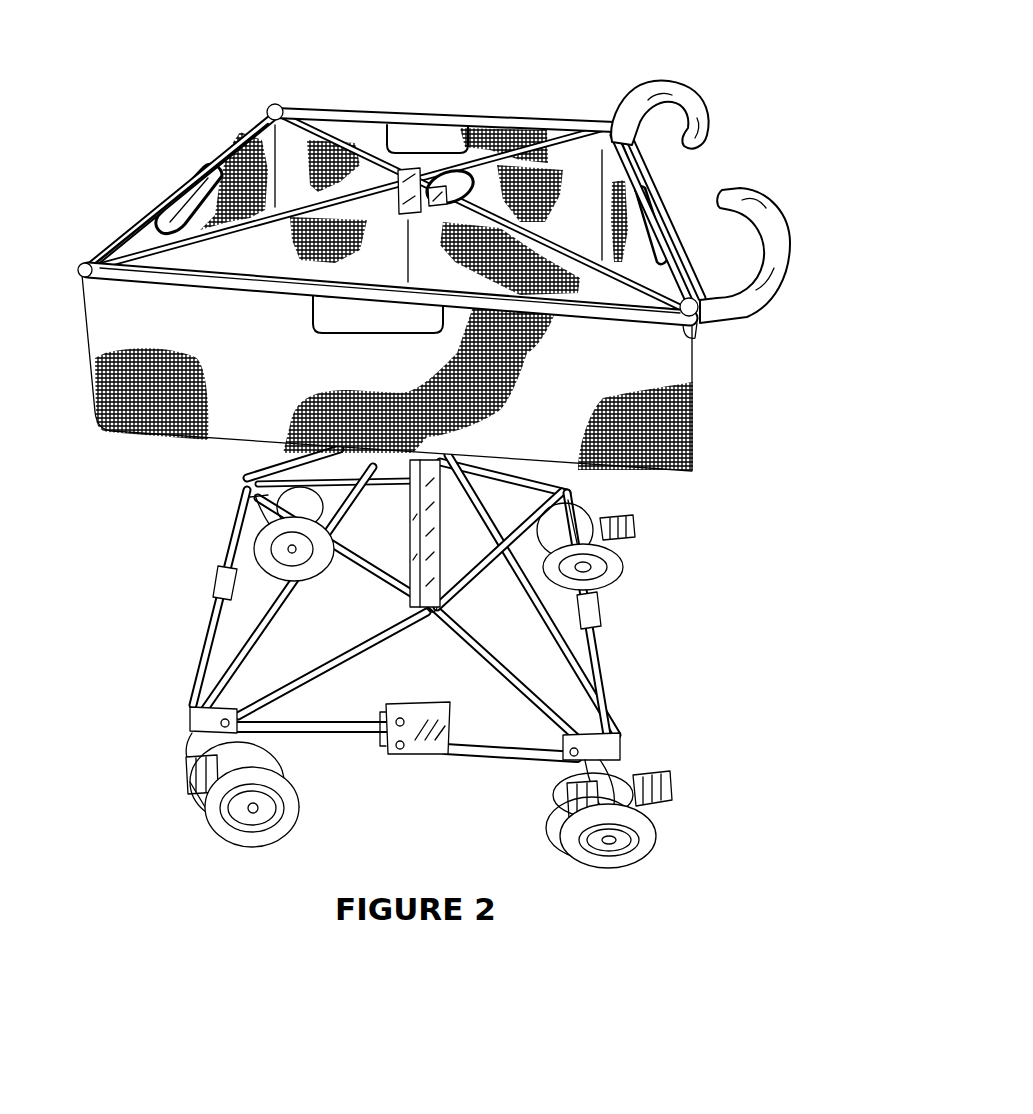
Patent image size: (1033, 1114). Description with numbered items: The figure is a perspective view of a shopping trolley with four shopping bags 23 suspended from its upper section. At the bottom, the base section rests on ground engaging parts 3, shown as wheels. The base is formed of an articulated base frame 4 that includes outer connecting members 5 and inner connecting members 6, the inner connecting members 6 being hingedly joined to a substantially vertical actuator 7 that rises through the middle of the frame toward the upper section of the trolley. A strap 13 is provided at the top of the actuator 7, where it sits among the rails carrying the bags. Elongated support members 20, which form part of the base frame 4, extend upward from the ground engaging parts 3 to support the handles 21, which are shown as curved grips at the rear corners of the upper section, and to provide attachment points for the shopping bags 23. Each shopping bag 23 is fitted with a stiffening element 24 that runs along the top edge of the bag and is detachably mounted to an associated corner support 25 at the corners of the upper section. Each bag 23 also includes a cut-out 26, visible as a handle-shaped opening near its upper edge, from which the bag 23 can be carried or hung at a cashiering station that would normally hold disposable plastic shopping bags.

The ground engaging parts 3 is at (182, 773).
The articulated base frame 4 is at (430, 612).
The outer connecting members 5 is at (517, 755).
The inner connecting members 6 is at (513, 700).
The actuator 7 is at (427, 517).
The strap 13 is at (498, 164).
The elongated support members 20 is at (565, 652).
The handles 21 is at (685, 87).
The shopping bag 23 is at (242, 145).
The stiffening element 24 is at (170, 276).
The corner support 25 is at (273, 103).
The cut-out 26 is at (193, 199).